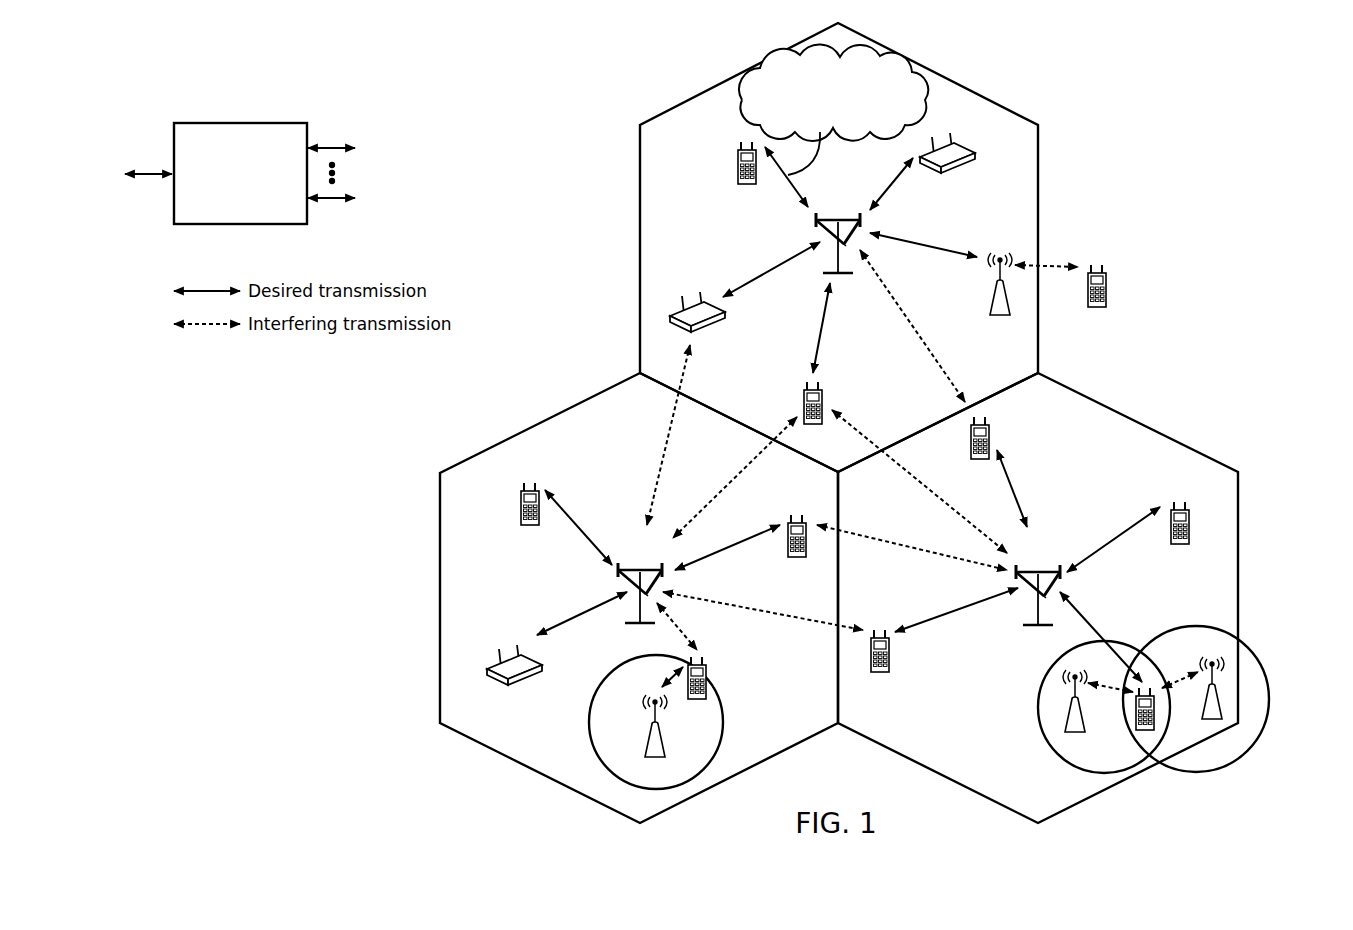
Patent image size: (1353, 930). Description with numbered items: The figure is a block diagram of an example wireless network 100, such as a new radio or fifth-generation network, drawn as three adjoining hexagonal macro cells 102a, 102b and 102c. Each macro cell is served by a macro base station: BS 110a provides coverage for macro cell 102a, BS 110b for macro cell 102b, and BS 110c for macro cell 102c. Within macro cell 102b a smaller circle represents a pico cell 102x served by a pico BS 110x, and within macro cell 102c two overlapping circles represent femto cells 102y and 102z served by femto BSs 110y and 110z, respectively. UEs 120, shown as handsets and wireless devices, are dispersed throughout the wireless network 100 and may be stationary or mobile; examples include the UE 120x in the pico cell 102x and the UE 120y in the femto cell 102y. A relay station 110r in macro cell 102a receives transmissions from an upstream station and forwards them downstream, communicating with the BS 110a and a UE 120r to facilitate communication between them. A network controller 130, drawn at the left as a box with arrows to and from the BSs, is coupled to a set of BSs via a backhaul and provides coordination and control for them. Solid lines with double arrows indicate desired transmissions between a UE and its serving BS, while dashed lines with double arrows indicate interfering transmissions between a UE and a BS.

The wireless network 100 is at (1172, 90).
The macro cell 102a is at (938, 73).
The macro cell 102b is at (543, 424).
The macro cell 102c is at (1140, 421).
The pico cell 102x is at (610, 673).
The femto cell 102y is at (1047, 672).
The femto cell 102z is at (1192, 623).
The macro BS 110a is at (836, 217).
The macro BS 110b is at (637, 567).
The macro BS 110c is at (1037, 567).
The relay station 110r is at (990, 303).
The pico BS 110x is at (665, 745).
The femto BS 110y is at (1085, 720).
The femto BS 110z is at (1222, 710).
The UE 120 is at (738, 147).
The UE 120r is at (1105, 297).
The UE 120x is at (708, 672).
The UE 120y is at (1134, 726).
The network controller 130 is at (236, 123).